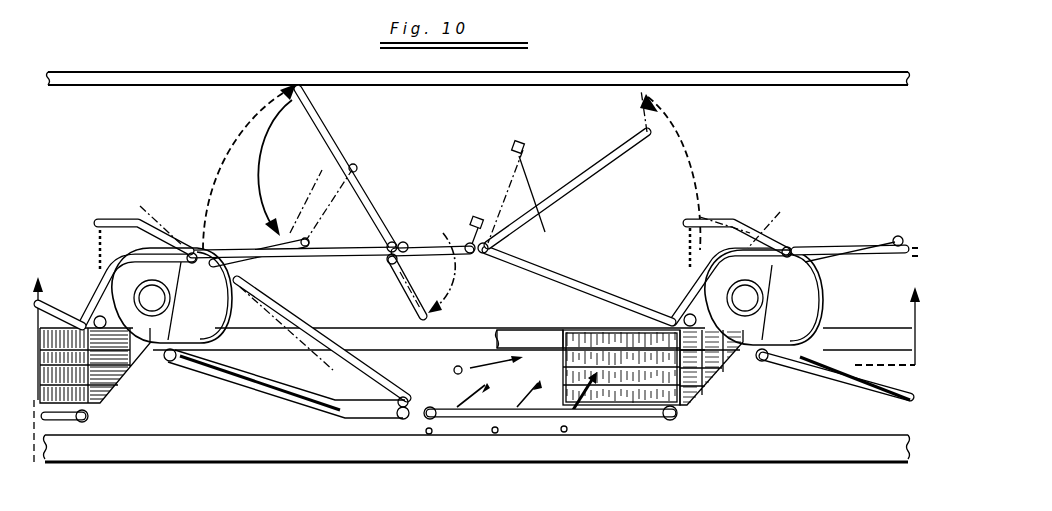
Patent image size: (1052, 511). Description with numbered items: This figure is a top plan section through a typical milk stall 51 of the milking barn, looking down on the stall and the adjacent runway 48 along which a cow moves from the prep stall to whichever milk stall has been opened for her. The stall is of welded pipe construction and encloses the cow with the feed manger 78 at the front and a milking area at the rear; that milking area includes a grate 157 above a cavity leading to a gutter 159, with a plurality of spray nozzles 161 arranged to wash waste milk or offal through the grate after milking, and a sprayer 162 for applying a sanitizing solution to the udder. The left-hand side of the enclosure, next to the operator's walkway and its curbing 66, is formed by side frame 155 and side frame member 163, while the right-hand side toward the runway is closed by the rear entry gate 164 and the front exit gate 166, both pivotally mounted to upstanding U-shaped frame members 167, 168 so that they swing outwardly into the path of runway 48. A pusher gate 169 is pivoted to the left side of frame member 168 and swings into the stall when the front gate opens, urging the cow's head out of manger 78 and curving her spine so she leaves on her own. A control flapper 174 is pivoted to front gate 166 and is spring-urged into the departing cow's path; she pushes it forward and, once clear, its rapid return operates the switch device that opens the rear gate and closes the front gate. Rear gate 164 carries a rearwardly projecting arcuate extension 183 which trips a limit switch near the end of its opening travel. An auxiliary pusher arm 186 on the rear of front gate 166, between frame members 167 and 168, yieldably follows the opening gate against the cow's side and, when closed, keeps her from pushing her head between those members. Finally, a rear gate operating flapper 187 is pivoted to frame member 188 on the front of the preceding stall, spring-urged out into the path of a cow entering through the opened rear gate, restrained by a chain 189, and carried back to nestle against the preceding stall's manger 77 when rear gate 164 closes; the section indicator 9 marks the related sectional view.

The section line 9- 9 is at (475, 330).
The runway 48 is at (448, 158).
The milk stall 51 is at (484, 470).
The curbing 66 is at (290, 455).
The manger 77 is at (823, 295).
The feed manger 78 is at (206, 308).
The side frame 155 is at (620, 420).
The grate 157 is at (595, 330).
The gutter 159 is at (518, 330).
The spray nozzles 161 is at (429, 434).
The sprayer 162 is at (455, 368).
The side frame member 163 is at (308, 403).
The rear entry gate 164 is at (563, 195).
The front exit gate 166 is at (333, 247).
The U-shaped frame member 167 is at (470, 253).
The U-shaped frame member 168 is at (407, 243).
The pusher gate 169 is at (297, 382).
The control flapper 174 is at (316, 195).
The arcuate extension 183 is at (498, 188).
The auxiliary pusher arm 186 is at (425, 253).
The rear gate operating flapper 187 is at (166, 209).
The frame member 188 is at (781, 265).
The chain 189 is at (98, 248).